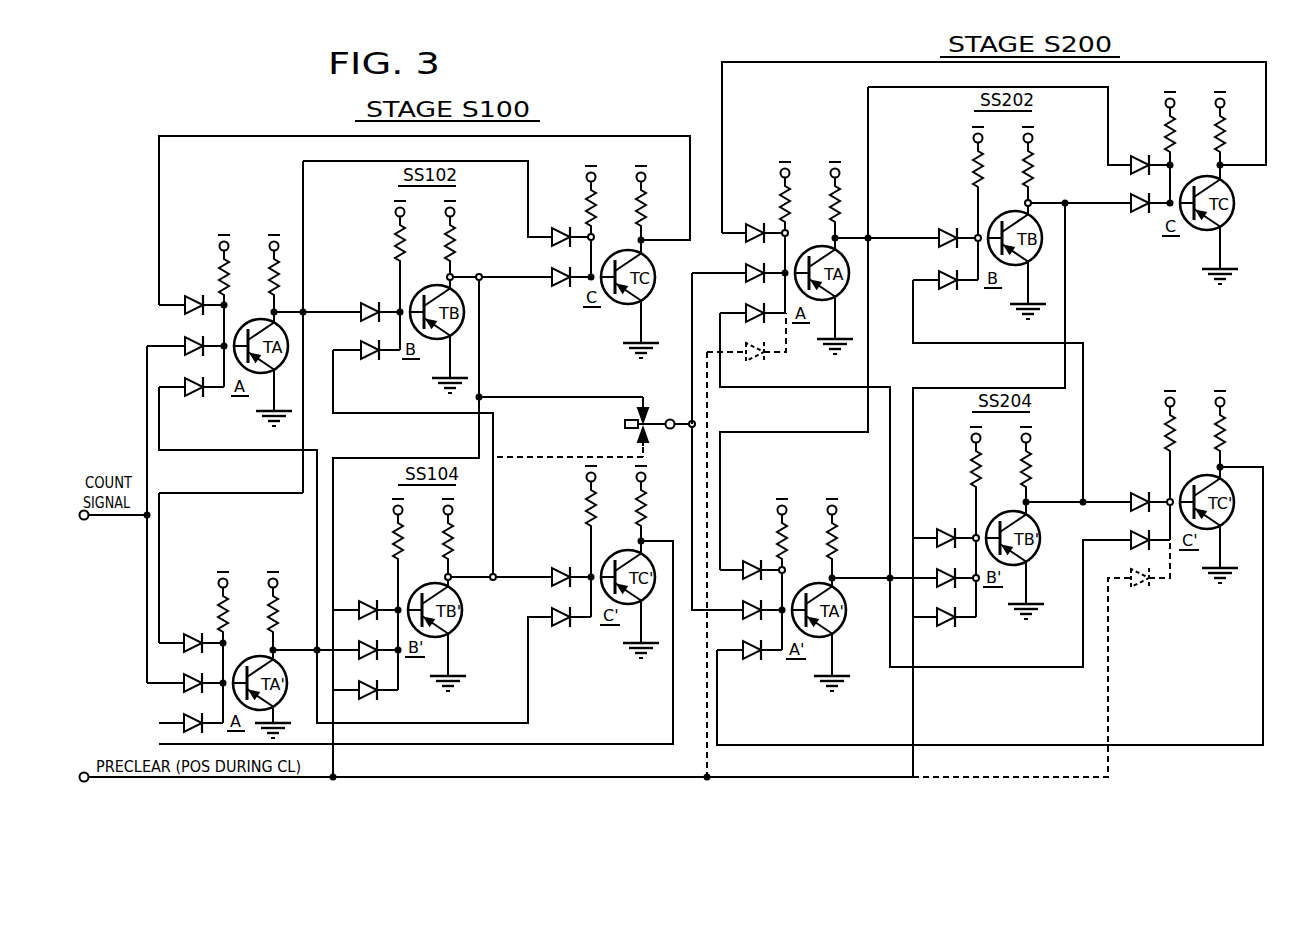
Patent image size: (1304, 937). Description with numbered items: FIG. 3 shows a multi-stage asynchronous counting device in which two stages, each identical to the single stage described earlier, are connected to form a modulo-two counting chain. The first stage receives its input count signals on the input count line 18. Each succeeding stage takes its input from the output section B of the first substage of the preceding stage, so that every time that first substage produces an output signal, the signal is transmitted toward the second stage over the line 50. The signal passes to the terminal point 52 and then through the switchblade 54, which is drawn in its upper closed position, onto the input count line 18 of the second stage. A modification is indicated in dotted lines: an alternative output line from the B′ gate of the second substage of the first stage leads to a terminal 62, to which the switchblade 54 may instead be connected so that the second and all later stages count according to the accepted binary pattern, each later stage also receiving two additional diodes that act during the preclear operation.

The input count line 18 is at (683, 420).
The line 50 is at (529, 397).
The terminal point 52 is at (647, 414).
The switchblade 54 is at (637, 427).
The terminal 62 is at (646, 435).